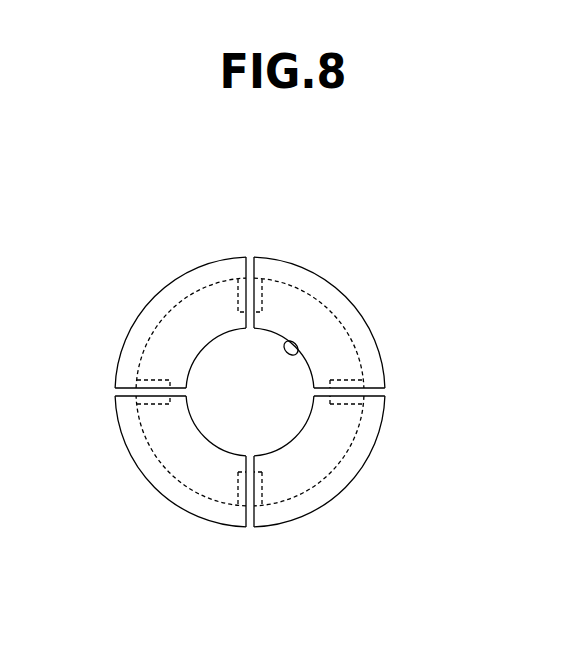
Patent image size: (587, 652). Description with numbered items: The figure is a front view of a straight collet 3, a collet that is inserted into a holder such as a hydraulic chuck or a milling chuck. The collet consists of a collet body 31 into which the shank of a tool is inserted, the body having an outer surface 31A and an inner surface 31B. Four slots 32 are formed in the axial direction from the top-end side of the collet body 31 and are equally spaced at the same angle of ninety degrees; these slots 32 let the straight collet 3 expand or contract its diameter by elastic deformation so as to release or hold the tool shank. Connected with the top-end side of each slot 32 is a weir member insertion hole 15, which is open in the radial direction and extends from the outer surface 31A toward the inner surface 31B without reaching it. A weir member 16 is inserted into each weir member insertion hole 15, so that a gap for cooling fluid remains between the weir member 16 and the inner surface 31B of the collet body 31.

The straight collet 3 is at (381, 225).
The collet body 31 is at (362, 486).
The outer surface 31A is at (369, 326).
The inner surface 31B is at (297, 351).
The slot 32 is at (249, 257).
The weir member insertion hole 15 is at (258, 293).
The weir member 16 is at (242, 291).